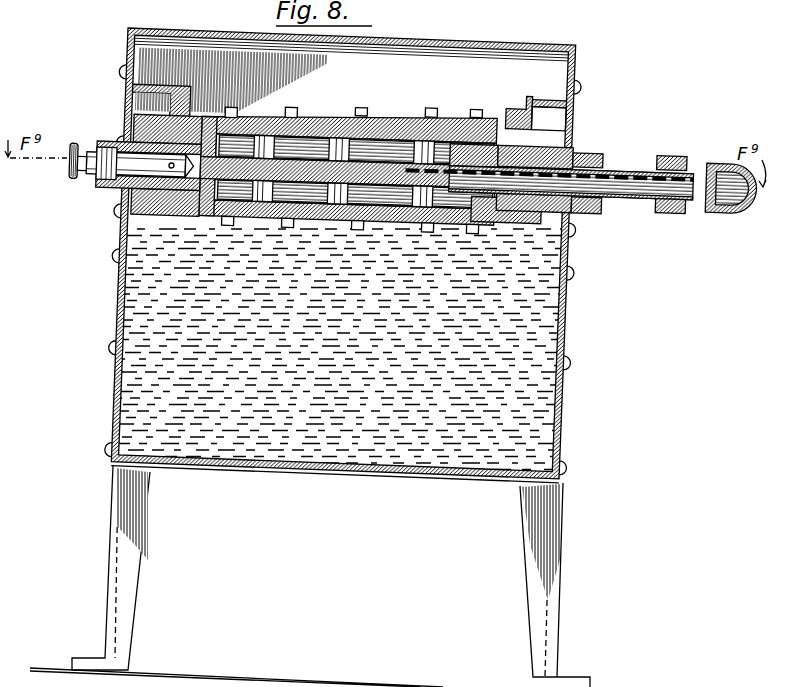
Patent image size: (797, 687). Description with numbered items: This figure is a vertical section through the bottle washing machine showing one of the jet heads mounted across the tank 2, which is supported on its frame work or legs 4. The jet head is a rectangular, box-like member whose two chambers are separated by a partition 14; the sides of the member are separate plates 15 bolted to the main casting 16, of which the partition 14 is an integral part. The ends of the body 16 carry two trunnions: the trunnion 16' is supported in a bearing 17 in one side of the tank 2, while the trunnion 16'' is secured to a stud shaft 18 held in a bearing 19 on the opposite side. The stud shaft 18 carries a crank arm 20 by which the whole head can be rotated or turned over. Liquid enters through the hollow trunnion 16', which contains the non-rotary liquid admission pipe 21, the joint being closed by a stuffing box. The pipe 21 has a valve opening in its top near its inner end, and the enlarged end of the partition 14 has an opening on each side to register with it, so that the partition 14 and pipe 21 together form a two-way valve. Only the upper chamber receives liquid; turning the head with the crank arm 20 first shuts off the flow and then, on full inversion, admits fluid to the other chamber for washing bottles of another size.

The tank 2 is at (567, 404).
The legs 4 is at (138, 549).
The partition 14 is at (283, 167).
The side plates 15 is at (358, 127).
The main casting 16 is at (476, 124).
The trunnion 16' is at (544, 222).
The trunnion 16'' is at (139, 181).
The bearing 17 is at (560, 148).
The stud shaft 18 is at (138, 163).
The bearing 19 is at (118, 157).
The crank arm 20 is at (73, 174).
The liquid admission pipe 21 is at (427, 163).